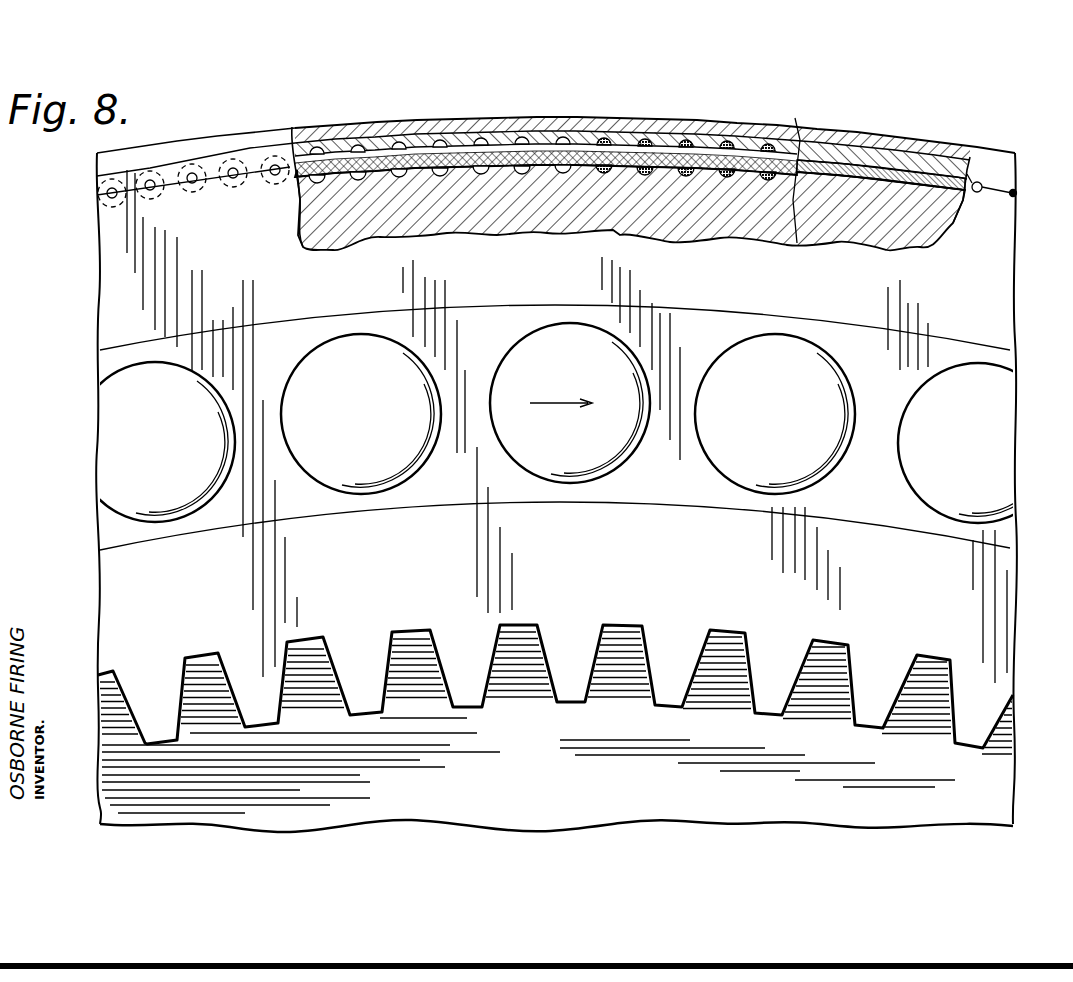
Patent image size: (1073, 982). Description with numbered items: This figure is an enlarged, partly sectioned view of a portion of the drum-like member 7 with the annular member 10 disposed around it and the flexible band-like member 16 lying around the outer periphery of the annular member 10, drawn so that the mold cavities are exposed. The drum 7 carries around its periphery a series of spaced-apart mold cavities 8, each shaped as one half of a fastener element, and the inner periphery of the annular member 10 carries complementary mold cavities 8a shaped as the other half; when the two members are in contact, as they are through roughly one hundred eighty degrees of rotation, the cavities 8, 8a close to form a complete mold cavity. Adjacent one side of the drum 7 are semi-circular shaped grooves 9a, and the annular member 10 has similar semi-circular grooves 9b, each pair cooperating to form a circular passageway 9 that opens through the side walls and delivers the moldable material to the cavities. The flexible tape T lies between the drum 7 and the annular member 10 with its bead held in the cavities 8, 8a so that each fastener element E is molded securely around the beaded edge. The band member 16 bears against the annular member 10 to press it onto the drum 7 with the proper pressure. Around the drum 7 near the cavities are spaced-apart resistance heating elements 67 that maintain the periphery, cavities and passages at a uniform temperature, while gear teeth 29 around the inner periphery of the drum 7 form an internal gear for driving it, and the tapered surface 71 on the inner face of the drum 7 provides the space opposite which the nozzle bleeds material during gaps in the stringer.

The drum-like member 7 is at (110, 293).
The mold cavities 8 is at (520, 172).
The mold cavities 8a is at (520, 143).
The circular passageways 9 is at (192, 184).
The semi-circular shaped grooves 9a is at (272, 177).
The semi-circular shaped grooves 9b is at (107, 197).
The annular member 10 is at (211, 150).
The flexible band-like member 16 is at (278, 126).
The gear teeth 29 is at (565, 687).
The resistance heating elements 67 is at (182, 462).
The tapered surface 71 is at (985, 224).
The flexible tape T is at (383, 150).
The fastener element E is at (648, 140).